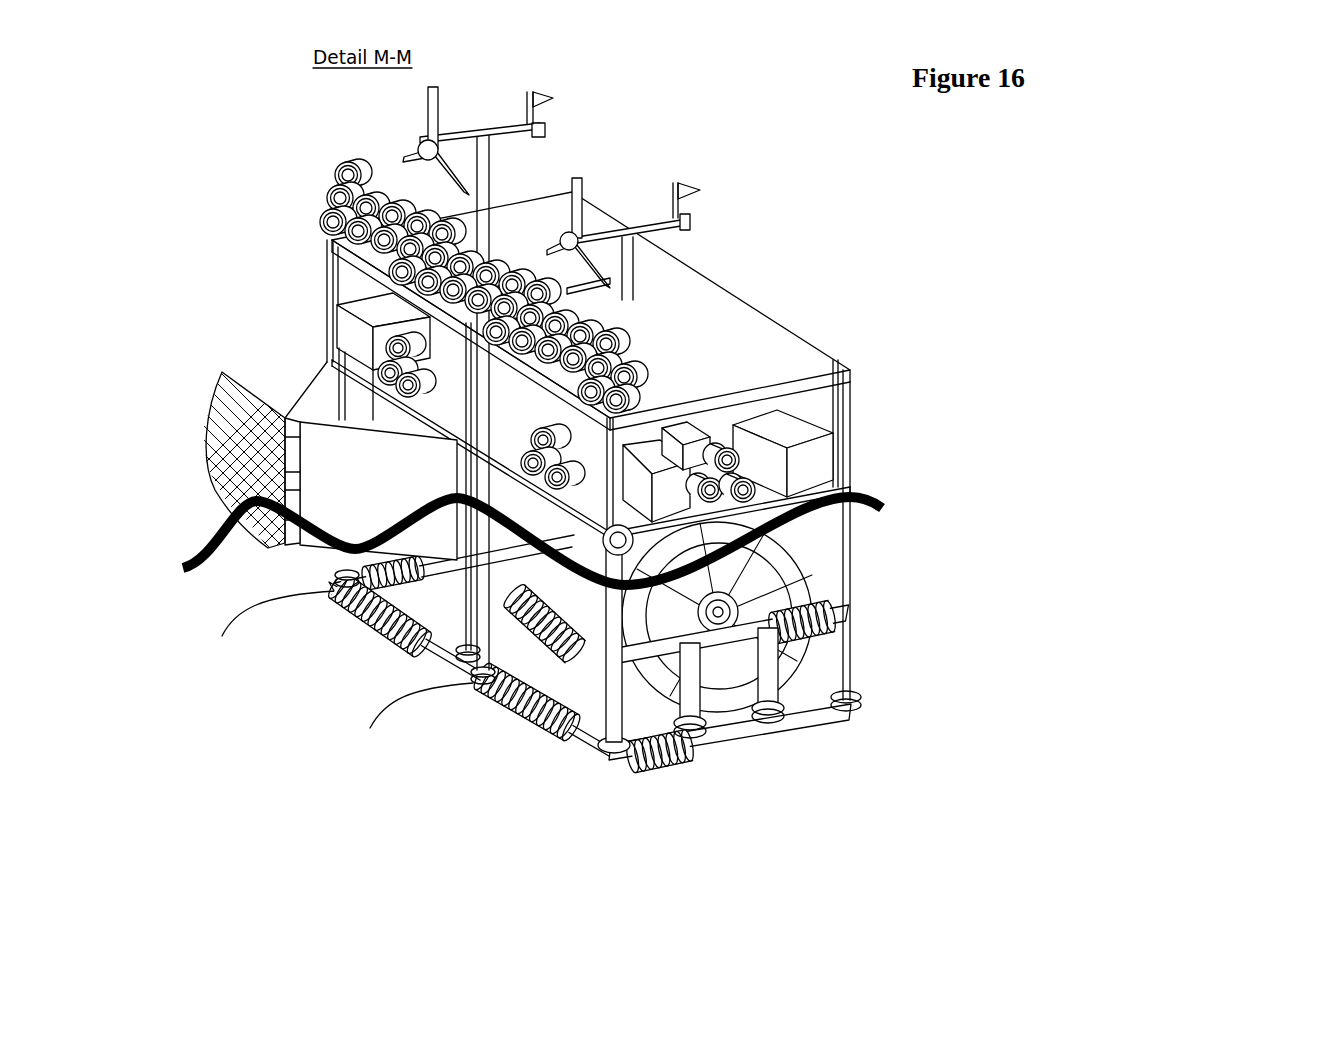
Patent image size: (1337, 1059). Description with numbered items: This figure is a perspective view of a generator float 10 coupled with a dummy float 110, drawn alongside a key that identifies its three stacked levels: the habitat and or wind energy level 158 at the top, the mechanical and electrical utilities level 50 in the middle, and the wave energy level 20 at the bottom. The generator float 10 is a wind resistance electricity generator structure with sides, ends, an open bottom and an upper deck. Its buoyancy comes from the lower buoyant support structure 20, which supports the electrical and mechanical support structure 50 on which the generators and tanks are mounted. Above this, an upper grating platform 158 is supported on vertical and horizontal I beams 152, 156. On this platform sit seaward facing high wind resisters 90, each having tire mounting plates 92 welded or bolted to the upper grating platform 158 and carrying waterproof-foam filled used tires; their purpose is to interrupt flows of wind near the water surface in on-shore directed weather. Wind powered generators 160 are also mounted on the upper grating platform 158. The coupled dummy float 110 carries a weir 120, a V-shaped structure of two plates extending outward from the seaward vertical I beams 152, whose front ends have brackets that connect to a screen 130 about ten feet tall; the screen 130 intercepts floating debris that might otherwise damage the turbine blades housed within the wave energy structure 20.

The wind resistance electricity generator structure 10 is at (603, 446).
The lower buoyant support structure 20 is at (791, 638).
The electrical and mechanical support structure 50 is at (794, 424).
The wind resisters 90 is at (422, 267).
The tire mounting plates 92 is at (640, 400).
The dummy float 110 is at (706, 172).
The weir 120 is at (323, 429).
The screen 130 is at (268, 407).
The vertical I beams 152 is at (304, 301).
The horizontal I beams 156 is at (325, 240).
The upper grating platform 158 is at (1070, 261).
The wind powered generators 160 is at (640, 193).